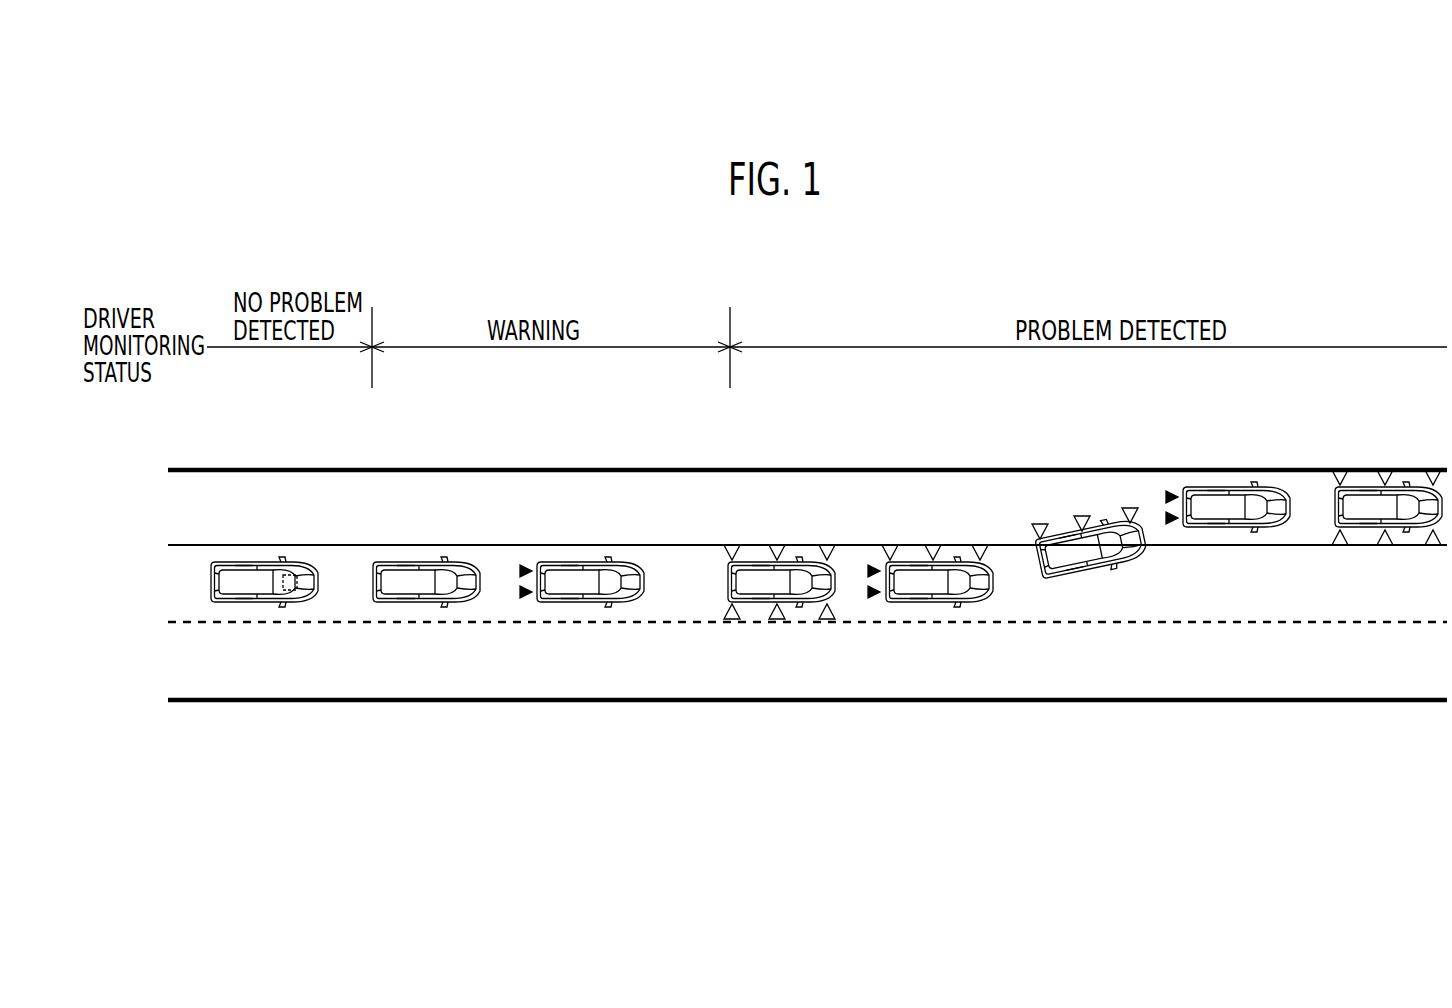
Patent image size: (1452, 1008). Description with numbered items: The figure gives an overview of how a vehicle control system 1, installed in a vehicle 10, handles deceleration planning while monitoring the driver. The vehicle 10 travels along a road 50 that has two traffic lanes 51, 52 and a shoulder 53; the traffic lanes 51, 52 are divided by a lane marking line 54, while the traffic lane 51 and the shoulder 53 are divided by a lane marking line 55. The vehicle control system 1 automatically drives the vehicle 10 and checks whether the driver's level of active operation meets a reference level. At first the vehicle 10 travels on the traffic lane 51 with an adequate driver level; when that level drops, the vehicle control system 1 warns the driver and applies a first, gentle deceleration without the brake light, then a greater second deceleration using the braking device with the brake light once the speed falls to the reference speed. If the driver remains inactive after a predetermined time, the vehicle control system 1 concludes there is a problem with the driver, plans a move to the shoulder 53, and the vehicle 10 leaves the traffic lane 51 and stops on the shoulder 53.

The vehicle control system 1 is at (293, 568).
The vehicle 10 is at (235, 580).
The road 50 is at (466, 706).
The traffic lane 51 is at (201, 595).
The traffic lane 52 is at (201, 670).
The shoulder 53 is at (201, 517).
The lane marking line 54 is at (345, 624).
The lane marking line 55 is at (368, 544).